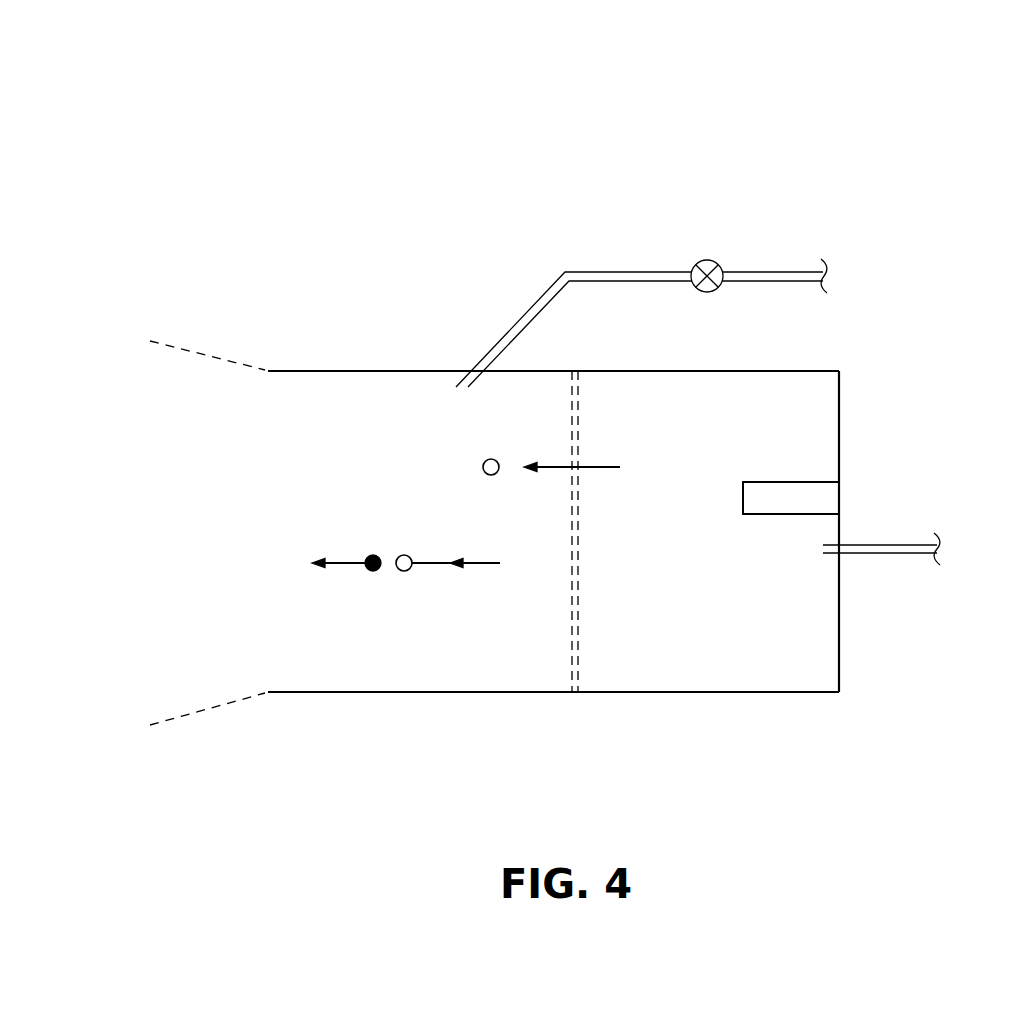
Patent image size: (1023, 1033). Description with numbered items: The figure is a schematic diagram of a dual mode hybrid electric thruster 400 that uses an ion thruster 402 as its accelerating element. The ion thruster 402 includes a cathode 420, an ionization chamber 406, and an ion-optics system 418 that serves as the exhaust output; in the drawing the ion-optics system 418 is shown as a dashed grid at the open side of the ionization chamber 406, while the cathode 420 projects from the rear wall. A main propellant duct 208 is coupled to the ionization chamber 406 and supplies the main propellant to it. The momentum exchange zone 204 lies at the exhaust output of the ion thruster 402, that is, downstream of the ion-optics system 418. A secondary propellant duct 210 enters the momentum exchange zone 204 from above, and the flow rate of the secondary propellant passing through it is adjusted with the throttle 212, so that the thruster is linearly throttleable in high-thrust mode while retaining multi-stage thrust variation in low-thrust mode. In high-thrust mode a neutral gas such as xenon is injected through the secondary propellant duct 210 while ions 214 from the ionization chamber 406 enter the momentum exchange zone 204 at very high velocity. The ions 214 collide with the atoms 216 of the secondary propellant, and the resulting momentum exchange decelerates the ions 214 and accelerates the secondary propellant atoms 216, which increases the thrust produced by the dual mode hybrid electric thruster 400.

The dual mode hybrid electric thruster 400 is at (887, 100).
The momentum exchange zone 204 is at (357, 393).
The ion thruster 402 is at (854, 396).
The ionization chamber 406 is at (650, 546).
The ion-optics system 418 is at (588, 661).
The cathode 420 is at (829, 492).
The main propellant duct 208 is at (881, 566).
The secondary propellant duct 210 is at (507, 309).
The throttle 212 is at (718, 246).
The ions 214 is at (466, 469).
The atoms 216 is at (357, 541).